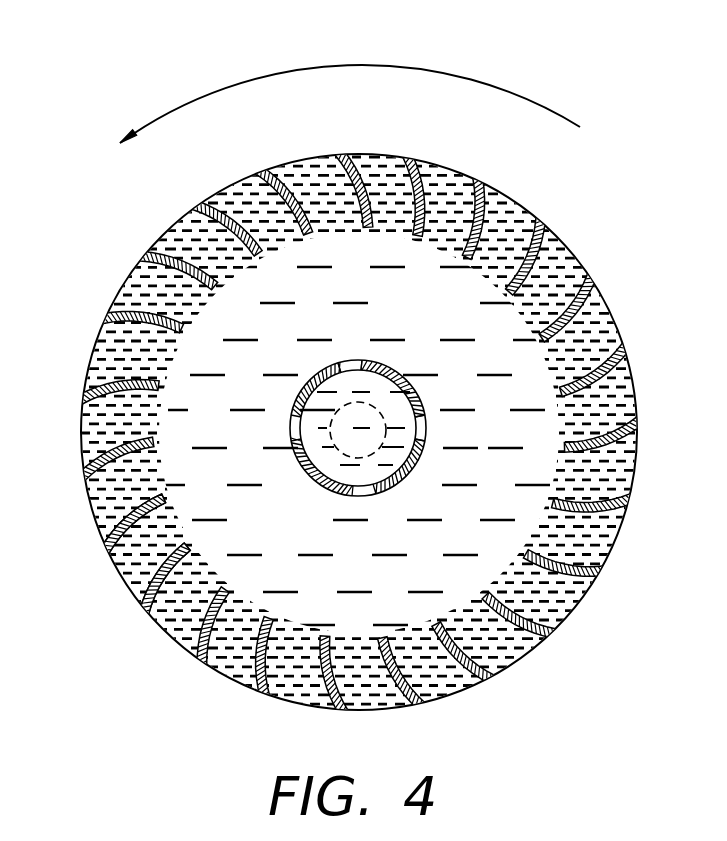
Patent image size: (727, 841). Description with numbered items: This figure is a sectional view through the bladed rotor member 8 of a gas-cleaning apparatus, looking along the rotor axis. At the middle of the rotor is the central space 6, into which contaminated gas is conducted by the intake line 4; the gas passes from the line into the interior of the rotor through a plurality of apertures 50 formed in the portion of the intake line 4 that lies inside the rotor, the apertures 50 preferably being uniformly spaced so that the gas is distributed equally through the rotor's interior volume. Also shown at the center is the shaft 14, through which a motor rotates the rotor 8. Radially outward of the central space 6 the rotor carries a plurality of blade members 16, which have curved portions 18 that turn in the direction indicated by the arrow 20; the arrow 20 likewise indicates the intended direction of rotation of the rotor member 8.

The intake line 4 is at (303, 378).
The central space 6 is at (226, 445).
The bladed rotor member 8 is at (145, 252).
The shaft 14 is at (343, 450).
The blade members 16 is at (222, 588).
The curved portions 18 is at (135, 588).
The arrow 20 is at (402, 65).
The apertures 50 is at (423, 418).